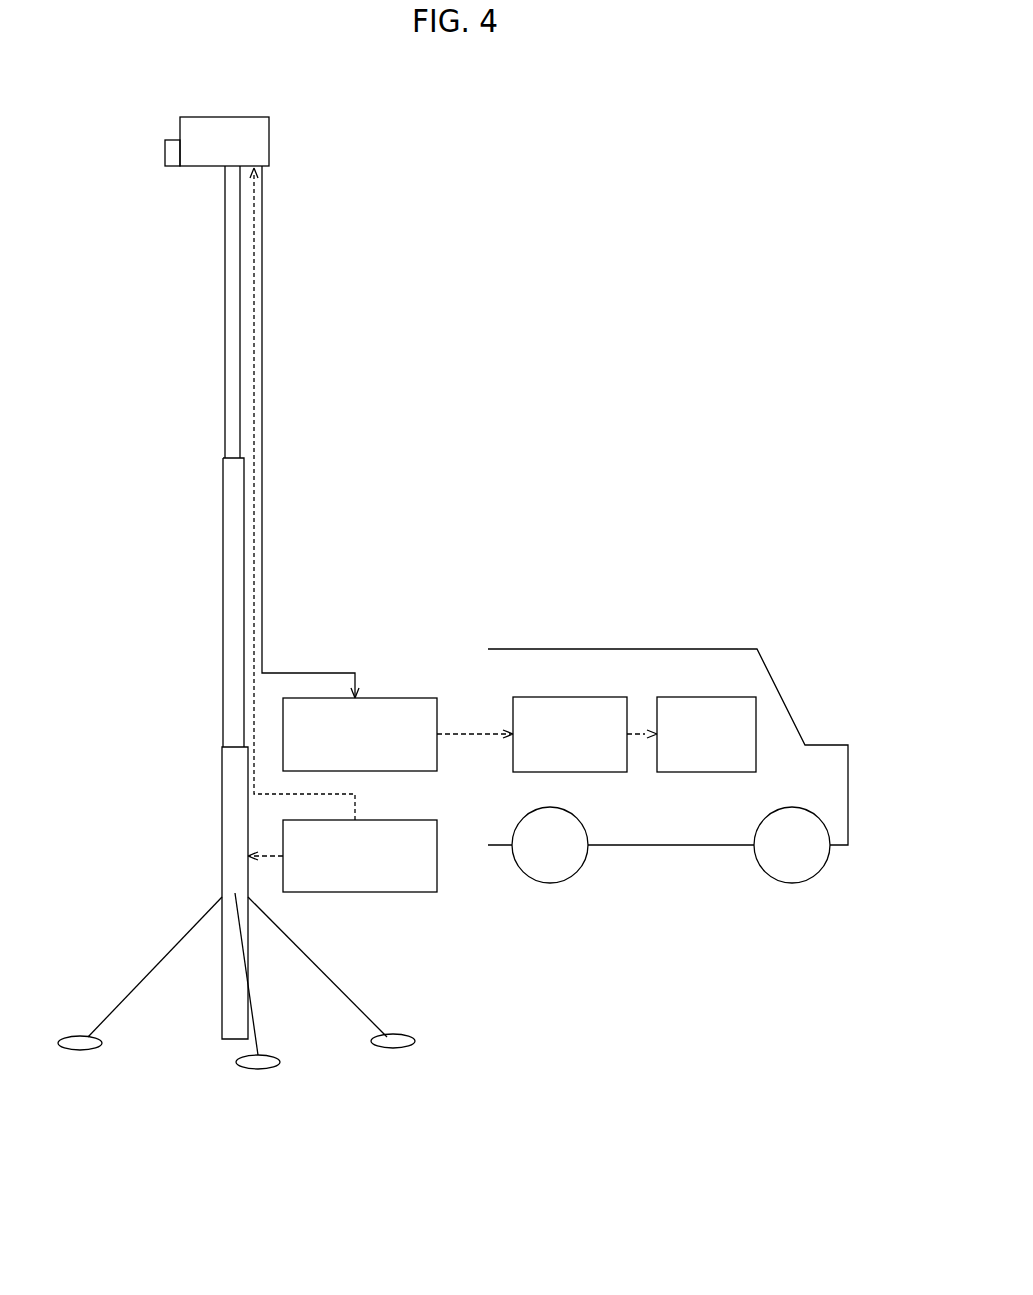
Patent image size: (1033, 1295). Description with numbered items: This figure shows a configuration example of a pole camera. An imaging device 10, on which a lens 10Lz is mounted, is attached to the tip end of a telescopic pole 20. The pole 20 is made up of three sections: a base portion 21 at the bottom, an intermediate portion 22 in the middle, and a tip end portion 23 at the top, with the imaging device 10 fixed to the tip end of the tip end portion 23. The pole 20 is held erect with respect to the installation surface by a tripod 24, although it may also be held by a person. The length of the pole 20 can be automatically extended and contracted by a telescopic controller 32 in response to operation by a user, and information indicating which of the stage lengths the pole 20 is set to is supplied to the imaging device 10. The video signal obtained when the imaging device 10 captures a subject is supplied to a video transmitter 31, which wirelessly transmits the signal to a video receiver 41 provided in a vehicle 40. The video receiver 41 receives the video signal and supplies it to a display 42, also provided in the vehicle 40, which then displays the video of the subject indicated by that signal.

The imaging device 10 is at (240, 117).
The lens 10Lz is at (165, 156).
The telescopic pole 20 is at (202, 602).
The base portion 21 is at (230, 808).
The intermediate portion 22 is at (230, 577).
The tip end portion 23 is at (228, 304).
The tripod 24 is at (362, 1015).
The video transmitter 31 is at (412, 698).
The telescopic controller 32 is at (437, 877).
The vehicle 40 is at (668, 743).
The video receiver 41 is at (593, 697).
The display 42 is at (725, 697).